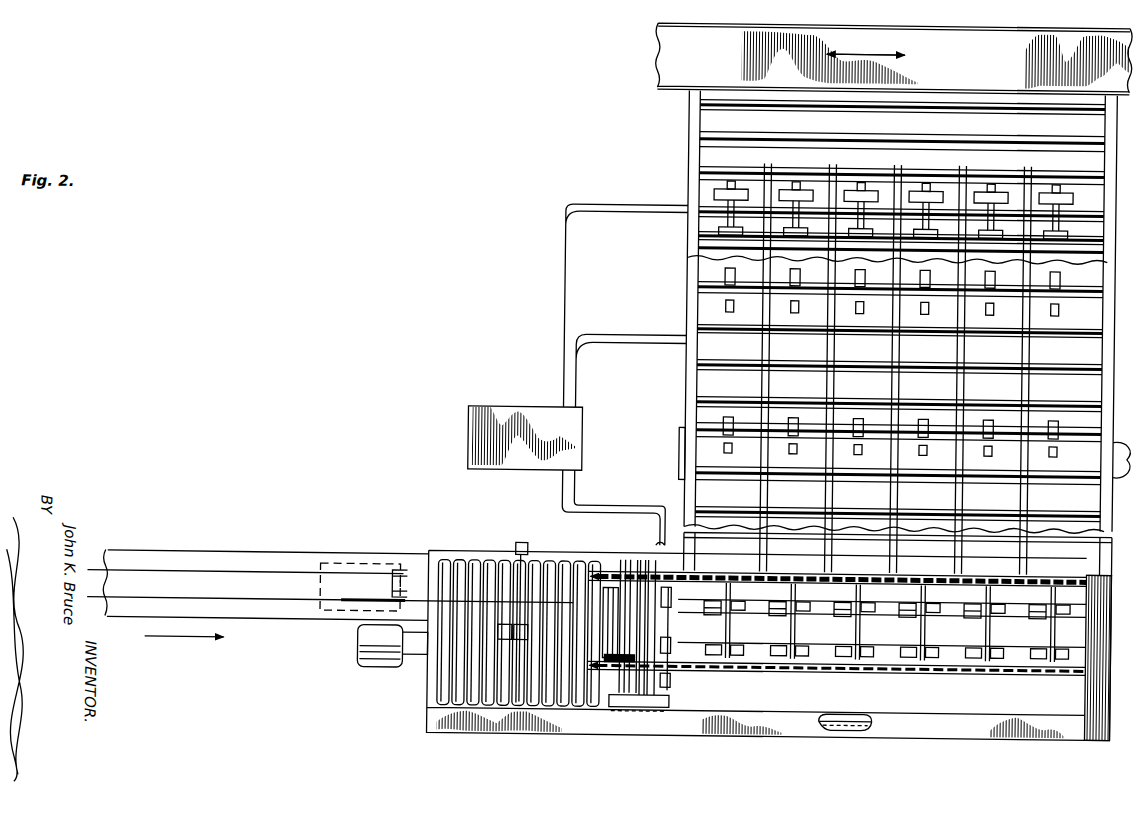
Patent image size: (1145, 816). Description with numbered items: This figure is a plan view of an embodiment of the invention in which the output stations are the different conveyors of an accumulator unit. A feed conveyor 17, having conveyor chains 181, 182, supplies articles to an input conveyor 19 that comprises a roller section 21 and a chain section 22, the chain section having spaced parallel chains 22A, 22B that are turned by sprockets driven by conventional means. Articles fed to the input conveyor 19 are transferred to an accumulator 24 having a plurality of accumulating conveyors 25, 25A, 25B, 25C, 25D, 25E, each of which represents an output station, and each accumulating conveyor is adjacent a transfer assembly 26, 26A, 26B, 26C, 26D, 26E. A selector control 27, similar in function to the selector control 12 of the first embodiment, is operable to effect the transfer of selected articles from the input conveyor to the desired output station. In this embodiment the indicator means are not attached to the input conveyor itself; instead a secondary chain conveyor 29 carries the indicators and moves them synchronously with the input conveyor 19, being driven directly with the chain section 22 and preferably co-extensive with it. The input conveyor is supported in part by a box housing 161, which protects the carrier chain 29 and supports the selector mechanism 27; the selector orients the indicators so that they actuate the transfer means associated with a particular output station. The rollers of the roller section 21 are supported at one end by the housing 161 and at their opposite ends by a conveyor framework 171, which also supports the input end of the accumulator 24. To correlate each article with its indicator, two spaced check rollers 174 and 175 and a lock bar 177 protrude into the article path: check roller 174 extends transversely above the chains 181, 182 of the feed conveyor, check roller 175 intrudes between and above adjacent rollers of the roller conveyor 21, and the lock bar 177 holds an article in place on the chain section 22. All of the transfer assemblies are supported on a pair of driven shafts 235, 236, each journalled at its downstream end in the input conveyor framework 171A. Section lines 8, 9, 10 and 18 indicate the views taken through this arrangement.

The section line 8- 8 is at (343, 612).
The section line 9- 9 is at (574, 532).
The section line 10- 10 is at (639, 748).
The selector control 12 is at (1029, 680).
The feed conveyor 17 is at (187, 550).
The section line 18 is at (1029, 601).
The input conveyor 19 is at (548, 552).
The roller section 21 is at (518, 687).
The chain section 22 is at (766, 678).
The chain 22A is at (811, 676).
The chain 22B is at (875, 586).
The accumulator 24 is at (680, 416).
The accumulating conveyor 25 is at (720, 350).
The accumulating conveyor 25A is at (782, 343).
The accumulating conveyor 25B is at (850, 389).
The accumulating conveyor 25C is at (905, 354).
The accumulating conveyor 25D is at (975, 389).
The accumulating conveyor 25E is at (1053, 354).
The transfer assembly 26 is at (736, 627).
The transfer assembly 26A is at (804, 631).
The transfer assembly 26B is at (868, 634).
The transfer assembly 26C is at (933, 634).
The transfer assembly 26D is at (998, 634).
The transfer assembly 26E is at (1020, 677).
The selector control 27 is at (655, 705).
The secondary chain conveyor 29 is at (839, 728).
The box housing 161 is at (895, 726).
The conveyor framework 171 is at (492, 551).
The input conveyor framework 171A is at (1099, 699).
The check roller 174 is at (422, 585).
The check roller 175 is at (609, 633).
The lock bar 177 is at (689, 599).
The conveyor chain 181 is at (282, 577).
The conveyor chain 182 is at (274, 615).
The driven shaft 235 is at (894, 652).
The driven shaft 236 is at (831, 617).